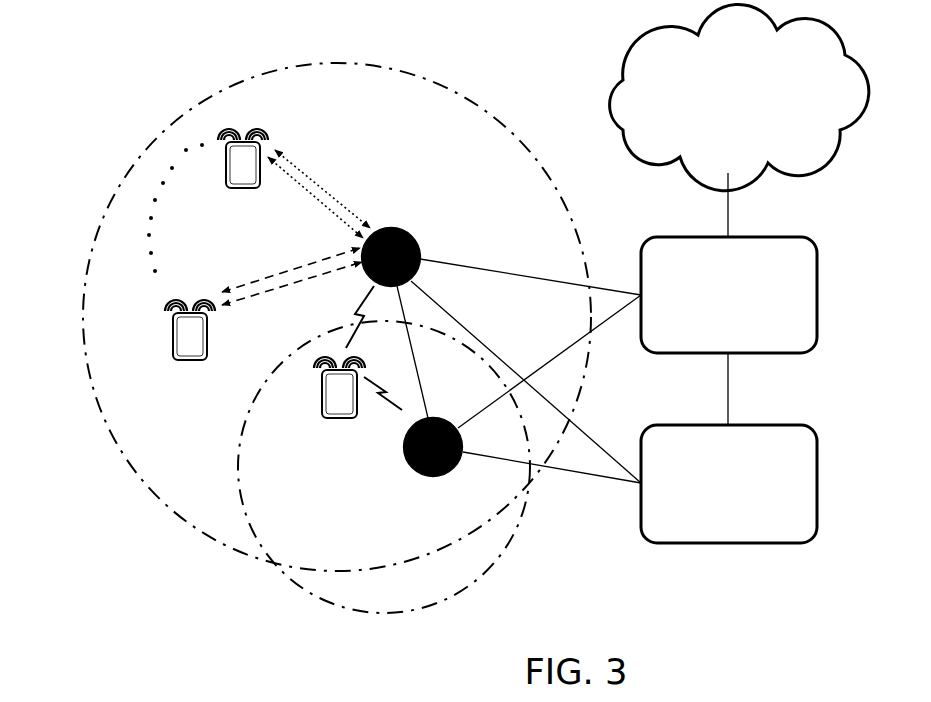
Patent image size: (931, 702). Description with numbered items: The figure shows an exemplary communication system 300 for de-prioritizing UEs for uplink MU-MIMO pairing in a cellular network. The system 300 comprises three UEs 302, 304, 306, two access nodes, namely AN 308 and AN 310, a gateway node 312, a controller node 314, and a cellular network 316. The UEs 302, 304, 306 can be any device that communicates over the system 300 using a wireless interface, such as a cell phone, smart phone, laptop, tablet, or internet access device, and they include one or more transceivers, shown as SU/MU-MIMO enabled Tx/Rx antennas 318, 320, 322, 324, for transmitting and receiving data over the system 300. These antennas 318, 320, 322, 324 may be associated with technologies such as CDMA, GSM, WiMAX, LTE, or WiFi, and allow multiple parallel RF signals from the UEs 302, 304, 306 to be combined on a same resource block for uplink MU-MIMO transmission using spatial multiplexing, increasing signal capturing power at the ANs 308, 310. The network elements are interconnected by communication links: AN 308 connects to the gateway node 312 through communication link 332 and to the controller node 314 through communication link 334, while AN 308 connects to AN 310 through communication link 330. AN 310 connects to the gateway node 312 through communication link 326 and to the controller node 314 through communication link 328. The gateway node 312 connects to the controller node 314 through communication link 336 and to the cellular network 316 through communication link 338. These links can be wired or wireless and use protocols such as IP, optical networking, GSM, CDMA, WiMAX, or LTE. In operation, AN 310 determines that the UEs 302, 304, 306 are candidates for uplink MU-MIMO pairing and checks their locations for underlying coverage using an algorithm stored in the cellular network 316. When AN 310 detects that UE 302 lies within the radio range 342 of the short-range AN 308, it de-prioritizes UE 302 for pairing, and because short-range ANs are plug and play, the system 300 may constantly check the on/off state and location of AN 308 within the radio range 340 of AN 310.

The communication system 300 is at (44, 474).
The UE 302 is at (320, 408).
The UE 304 is at (207, 350).
The UE 306 is at (244, 192).
The AN 308 is at (418, 473).
The AN 310 is at (407, 227).
The gateway node 312 is at (729, 295).
The controller node 314 is at (729, 484).
The cellular network 316 is at (739, 98).
The Tx/Rx antenna 318 is at (360, 306).
The Tx/Rx antenna 320 is at (287, 269).
The Tx/Rx antenna 322 is at (319, 189).
The Tx/Rx antenna 324 is at (384, 402).
The communication link 326 is at (518, 270).
The communication link 328 is at (483, 336).
The communication link 330 is at (424, 393).
The communication link 332 is at (571, 345).
The communication link 334 is at (472, 452).
The communication link 336 is at (730, 392).
The communication link 338 is at (730, 212).
The radio range 340 is at (406, 68).
The radio range 342 is at (309, 600).